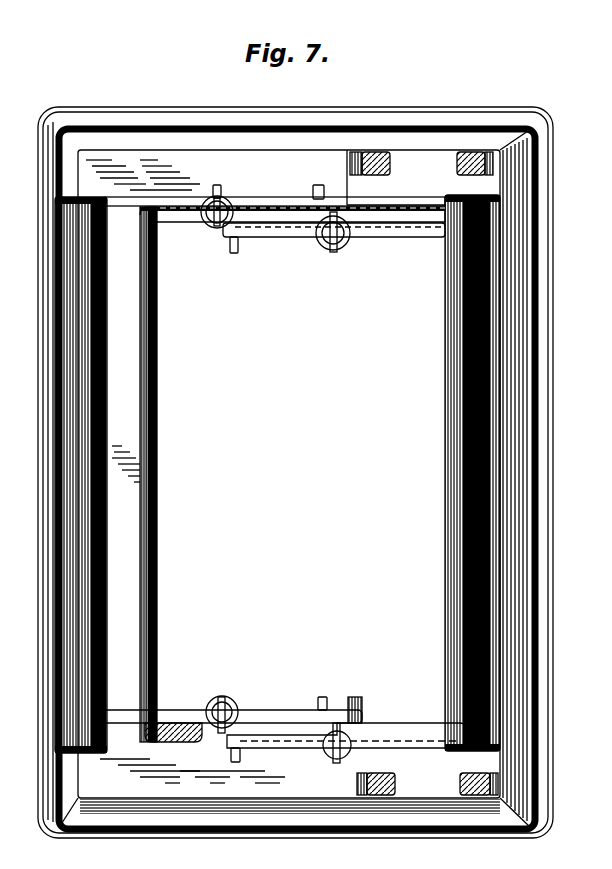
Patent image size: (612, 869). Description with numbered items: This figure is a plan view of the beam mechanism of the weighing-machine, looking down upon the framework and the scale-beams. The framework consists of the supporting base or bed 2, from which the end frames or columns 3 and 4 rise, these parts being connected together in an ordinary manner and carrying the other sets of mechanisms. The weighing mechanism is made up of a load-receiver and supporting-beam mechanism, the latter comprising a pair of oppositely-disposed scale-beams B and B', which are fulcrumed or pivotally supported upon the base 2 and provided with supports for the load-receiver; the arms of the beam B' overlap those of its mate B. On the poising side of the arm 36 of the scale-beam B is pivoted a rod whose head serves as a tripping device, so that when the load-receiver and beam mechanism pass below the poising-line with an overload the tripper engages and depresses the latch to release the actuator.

The scale-beam B is at (61, 475).
The scale-beam B' is at (458, 473).
The supporting base or bed 2 is at (135, 435).
The end frame or column 3 is at (459, 775).
The end frame or column 4 is at (456, 157).
The arm of the scale-beam 36 is at (348, 714).